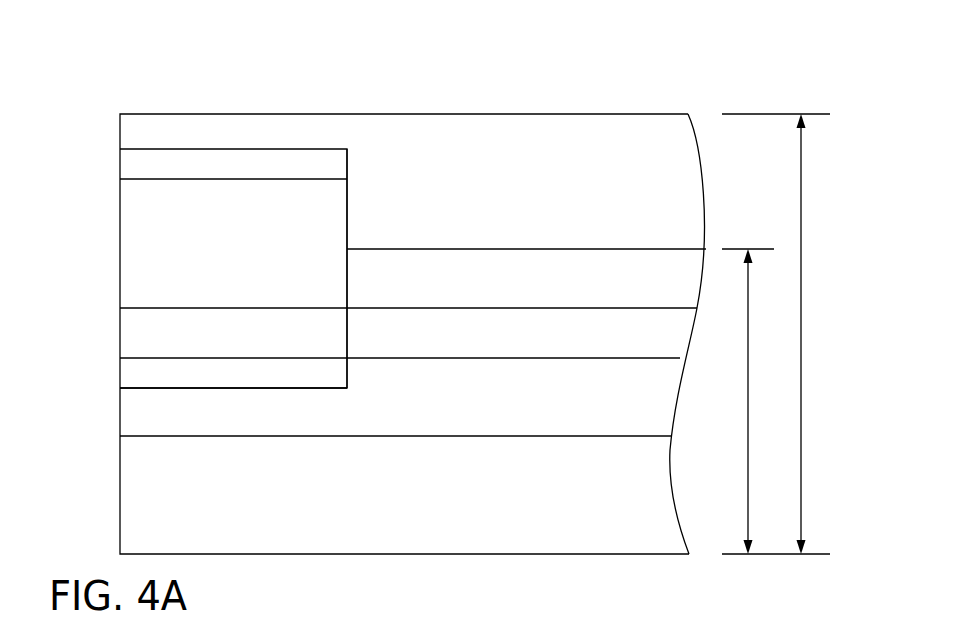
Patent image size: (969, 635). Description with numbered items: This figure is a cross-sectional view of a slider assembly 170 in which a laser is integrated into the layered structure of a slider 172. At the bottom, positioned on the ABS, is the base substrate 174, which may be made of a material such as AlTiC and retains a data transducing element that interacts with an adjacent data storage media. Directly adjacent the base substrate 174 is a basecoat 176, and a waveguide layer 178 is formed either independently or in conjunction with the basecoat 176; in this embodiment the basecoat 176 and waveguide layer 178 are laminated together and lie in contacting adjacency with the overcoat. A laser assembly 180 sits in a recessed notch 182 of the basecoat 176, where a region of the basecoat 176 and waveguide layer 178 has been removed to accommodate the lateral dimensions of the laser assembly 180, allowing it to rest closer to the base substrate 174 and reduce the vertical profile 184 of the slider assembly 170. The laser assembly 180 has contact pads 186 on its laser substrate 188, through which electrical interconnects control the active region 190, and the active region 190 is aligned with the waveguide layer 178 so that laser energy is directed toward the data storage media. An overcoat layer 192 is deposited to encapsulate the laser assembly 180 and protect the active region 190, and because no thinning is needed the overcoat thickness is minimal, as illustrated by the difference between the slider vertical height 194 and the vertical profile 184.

The slider assembly 170 is at (725, 90).
The slider 172 is at (472, 557).
The base substrate 174 is at (489, 519).
The basecoat 176 is at (413, 342).
The waveguide layer 178 is at (567, 341).
The laser assembly 180 is at (98, 268).
The recessed notch 182 is at (245, 392).
The vertical profile 184 is at (783, 334).
The contact pads 186 is at (120, 167).
The laser substrate 188 is at (327, 268).
The active region 190 is at (120, 331).
The overcoat layer 192 is at (566, 157).
The slider vertical height 194 is at (756, 401).